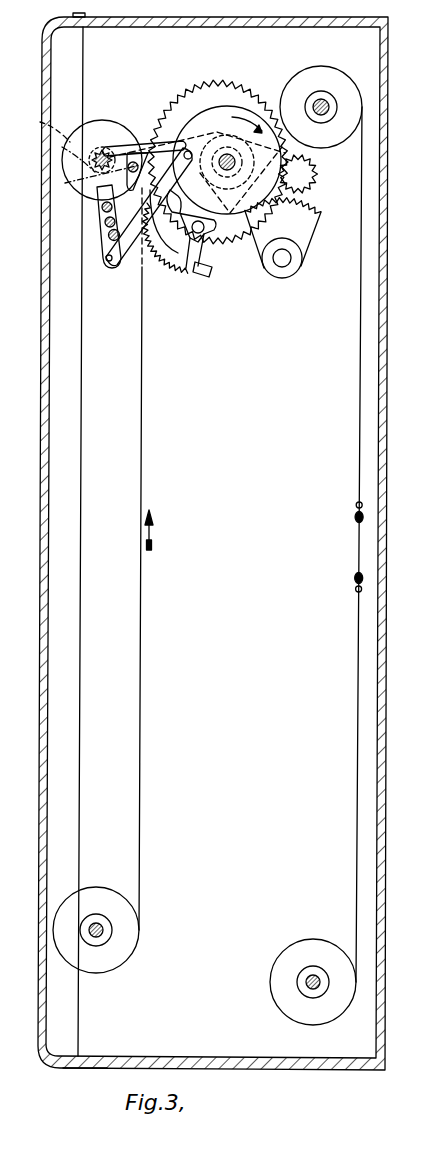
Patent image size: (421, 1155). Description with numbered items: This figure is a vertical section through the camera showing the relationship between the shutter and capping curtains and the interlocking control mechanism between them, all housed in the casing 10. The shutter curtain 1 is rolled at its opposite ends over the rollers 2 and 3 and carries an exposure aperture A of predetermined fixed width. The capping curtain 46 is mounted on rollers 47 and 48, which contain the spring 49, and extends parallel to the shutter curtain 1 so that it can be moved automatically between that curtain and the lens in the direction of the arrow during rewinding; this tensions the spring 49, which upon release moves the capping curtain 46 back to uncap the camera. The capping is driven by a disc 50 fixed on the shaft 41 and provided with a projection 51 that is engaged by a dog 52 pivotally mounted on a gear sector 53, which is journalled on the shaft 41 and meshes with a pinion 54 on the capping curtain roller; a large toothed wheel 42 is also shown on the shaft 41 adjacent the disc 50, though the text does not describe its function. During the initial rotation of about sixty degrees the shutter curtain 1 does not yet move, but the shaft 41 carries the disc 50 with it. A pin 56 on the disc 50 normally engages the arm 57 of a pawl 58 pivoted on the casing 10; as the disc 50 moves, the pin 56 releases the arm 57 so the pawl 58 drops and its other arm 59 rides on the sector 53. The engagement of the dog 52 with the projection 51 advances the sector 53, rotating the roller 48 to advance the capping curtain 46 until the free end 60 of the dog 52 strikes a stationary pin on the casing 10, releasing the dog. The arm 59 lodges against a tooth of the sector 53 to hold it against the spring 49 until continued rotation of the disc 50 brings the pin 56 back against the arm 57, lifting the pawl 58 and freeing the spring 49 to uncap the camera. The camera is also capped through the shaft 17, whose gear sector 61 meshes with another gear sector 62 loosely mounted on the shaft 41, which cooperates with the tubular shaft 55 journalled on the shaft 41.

The shutter curtain 1 is at (356, 672).
The roller 2 is at (300, 72).
The roller 3 is at (290, 948).
The casing 10 is at (40, 365).
The shaft 17 is at (288, 274).
The shaft 41 is at (218, 137).
The gear wheel 42 is at (180, 92).
The capping curtain 46 is at (142, 487).
The roller 47 is at (62, 147).
The roller 48 is at (112, 968).
The spring 49 is at (55, 118).
The disc 50 is at (227, 104).
The projection 51 is at (182, 196).
The dog 52 is at (181, 222).
The gear sector 53 is at (170, 264).
The pinion 54 is at (97, 150).
The tubular shaft 55 is at (243, 162).
The pin 56 is at (182, 135).
The arm 57 is at (165, 160).
The pawl 58 is at (131, 236).
The arm 59 is at (88, 200).
The free end 60 is at (88, 181).
The gear sector 61 is at (302, 230).
The gear sector 62 is at (307, 180).
The exposure aperture A is at (356, 538).